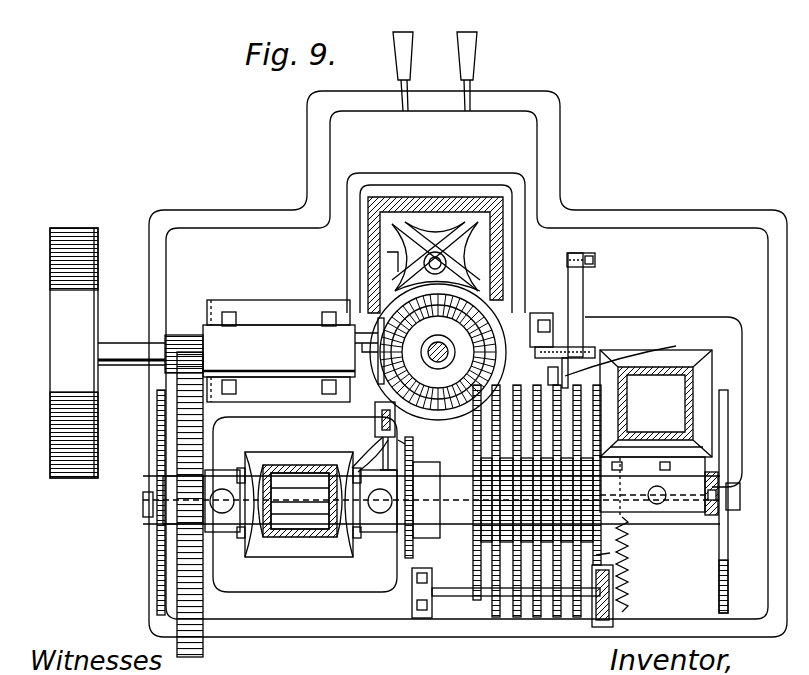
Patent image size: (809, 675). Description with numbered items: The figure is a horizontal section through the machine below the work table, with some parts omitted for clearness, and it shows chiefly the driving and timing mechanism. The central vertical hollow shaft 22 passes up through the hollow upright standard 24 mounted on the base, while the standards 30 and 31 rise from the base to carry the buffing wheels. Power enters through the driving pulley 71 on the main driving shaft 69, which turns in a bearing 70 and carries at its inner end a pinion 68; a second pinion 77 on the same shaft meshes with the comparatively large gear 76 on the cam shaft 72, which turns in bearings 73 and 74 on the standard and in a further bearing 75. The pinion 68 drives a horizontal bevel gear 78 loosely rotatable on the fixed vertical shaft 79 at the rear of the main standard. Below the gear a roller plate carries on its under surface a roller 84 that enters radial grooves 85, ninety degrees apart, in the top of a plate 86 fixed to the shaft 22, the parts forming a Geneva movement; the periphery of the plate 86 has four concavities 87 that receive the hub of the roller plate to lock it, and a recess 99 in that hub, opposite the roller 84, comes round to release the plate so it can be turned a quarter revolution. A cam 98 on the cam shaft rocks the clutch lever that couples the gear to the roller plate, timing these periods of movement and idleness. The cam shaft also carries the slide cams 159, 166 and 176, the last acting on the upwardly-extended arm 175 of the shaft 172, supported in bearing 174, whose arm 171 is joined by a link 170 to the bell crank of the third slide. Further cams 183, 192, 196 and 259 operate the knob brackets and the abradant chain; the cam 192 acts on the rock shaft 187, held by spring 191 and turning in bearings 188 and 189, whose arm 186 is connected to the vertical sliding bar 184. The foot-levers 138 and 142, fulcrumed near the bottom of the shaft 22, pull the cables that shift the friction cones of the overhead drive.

The hollow shaft 22 is at (500, 214).
The hollow upright standard 24 is at (451, 196).
The standard 30 is at (649, 371).
The standard 31 is at (296, 452).
The pinion 68 is at (378, 345).
The main driving shaft 69 is at (121, 346).
The bearing 70 is at (279, 351).
The driving pulley 71 is at (50, 348).
The cam shaft 72 is at (300, 505).
The bearing 73 is at (224, 521).
The bearing 74 is at (380, 532).
The bearing 75 is at (665, 515).
The gear 76 is at (206, 625).
The pinion 77 is at (178, 335).
The bevel gear 78 is at (530, 330).
The fixed vertical shaft 79 is at (441, 364).
The roller 84 is at (392, 310).
The radial grooves 85 is at (439, 243).
The plate 86 is at (463, 266).
The concavities 87 is at (397, 259).
The cam 98 is at (414, 554).
The recess 99 is at (420, 341).
The foot-lever 138 is at (405, 30).
The foot-lever 142 is at (474, 34).
The cam 159 is at (520, 617).
The cam 166 is at (500, 617).
The link 170 is at (593, 257).
The arm 171 is at (582, 304).
The shaft 172 is at (594, 352).
The bearing 174 is at (548, 374).
The arm 175 is at (637, 352).
The cam 176 is at (540, 617).
The cam 183 is at (480, 613).
The sliding bar 184 is at (375, 418).
The arm 186 is at (404, 444).
The rock shaft 187 is at (516, 605).
The bearing 188 is at (415, 592).
The bearing 189 is at (600, 628).
The spring 191 is at (604, 554).
The cam 192 is at (652, 582).
The cam 196 is at (560, 617).
The cam 259 is at (729, 430).